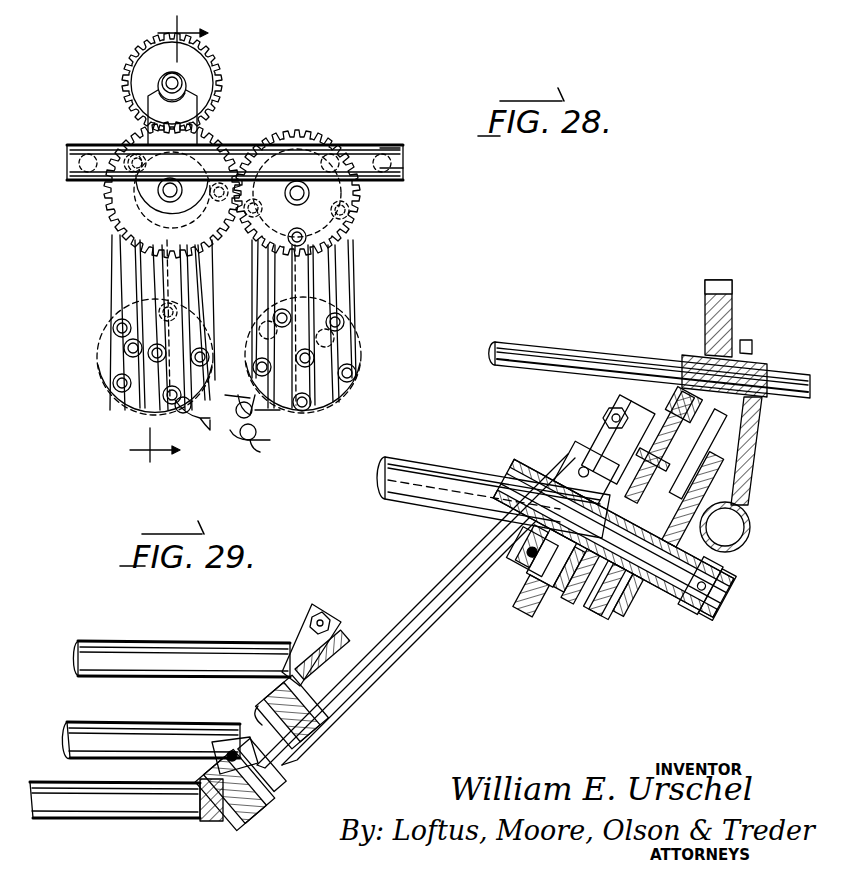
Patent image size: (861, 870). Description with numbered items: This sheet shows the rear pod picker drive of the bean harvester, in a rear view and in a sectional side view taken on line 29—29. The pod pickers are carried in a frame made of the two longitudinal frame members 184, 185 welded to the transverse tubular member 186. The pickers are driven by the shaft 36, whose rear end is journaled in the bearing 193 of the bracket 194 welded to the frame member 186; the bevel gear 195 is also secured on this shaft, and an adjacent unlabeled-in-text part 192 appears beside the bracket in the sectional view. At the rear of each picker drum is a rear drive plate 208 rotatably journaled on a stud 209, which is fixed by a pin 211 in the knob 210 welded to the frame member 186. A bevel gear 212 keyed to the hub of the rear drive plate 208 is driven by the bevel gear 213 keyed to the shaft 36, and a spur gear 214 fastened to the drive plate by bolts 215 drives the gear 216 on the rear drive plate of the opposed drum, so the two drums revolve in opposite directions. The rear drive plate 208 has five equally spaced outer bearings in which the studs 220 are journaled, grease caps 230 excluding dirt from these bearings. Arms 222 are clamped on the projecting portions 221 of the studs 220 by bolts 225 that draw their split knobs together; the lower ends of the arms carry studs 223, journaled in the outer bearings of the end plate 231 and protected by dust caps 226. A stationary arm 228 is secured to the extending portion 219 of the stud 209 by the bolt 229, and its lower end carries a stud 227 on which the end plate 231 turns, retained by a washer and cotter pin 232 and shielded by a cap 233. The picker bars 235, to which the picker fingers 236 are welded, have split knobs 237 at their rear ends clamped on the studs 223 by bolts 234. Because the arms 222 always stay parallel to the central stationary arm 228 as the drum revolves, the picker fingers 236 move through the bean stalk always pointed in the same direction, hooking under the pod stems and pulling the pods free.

In FIG. 28, the section line 29— 29 is at (169, 246).
In FIG. 28, the shaft 36 is at (182, 80).
In FIG. 29, the shaft 36 is at (555, 355).
In FIG. 28, the longitudinal frame member 184 is at (400, 148).
In FIG. 28, the longitudinal frame member 185 is at (95, 160).
In FIG. 29, the longitudinal frame member 185 is at (435, 473).
In FIG. 28, the transverse tubular member 186 is at (403, 168).
In FIG. 29, the transverse tubular member 186 is at (748, 524).
In FIG. 29, the arm 192 is at (750, 470).
In FIG. 28, the bearing 193 is at (160, 90).
In FIG. 29, the bearing 193 is at (740, 360).
In FIG. 28, the bracket 194 is at (160, 118).
In FIG. 28, the bevel gear 195 is at (140, 190).
In FIG. 29, the rear drive plate 208 is at (620, 600).
In FIG. 29, the stud 209 is at (735, 612).
In FIG. 28, the knob 210 is at (130, 205).
In FIG. 29, the knob 210 is at (718, 616).
In FIG. 28, the pin 211 is at (165, 208).
In FIG. 29, the pin 211 is at (732, 585).
In FIG. 29, the bevel gear 212 is at (620, 590).
In FIG. 28, the bevel gear 213 is at (143, 66).
In FIG. 29, the bevel gear 213 is at (722, 290).
In FIG. 28, the spur gear 214 is at (158, 197).
In FIG. 29, the spur gear 214 is at (548, 640).
In FIG. 29, the bolts 215 is at (640, 415).
In FIG. 28, the gear 216 is at (355, 196).
In FIG. 29, the extending portion of stud 219 is at (578, 500).
In FIG. 29, the studs 220 is at (545, 610).
In FIG. 29, the projecting portions of studs 221 is at (513, 598).
In FIG. 28, the arms 222 is at (355, 262).
In FIG. 29, the arms 222 is at (370, 693).
In FIG. 29, the studs 223 is at (268, 795).
In FIG. 29, the bolts 225 is at (612, 418).
In FIG. 29, the dust caps 226 is at (222, 808).
In FIG. 29, the stud 227 is at (330, 720).
In FIG. 28, the stationary arm 228 is at (145, 310).
In FIG. 29, the stationary arm 228 is at (405, 650).
In FIG. 29, the bolt 229 is at (590, 475).
In FIG. 29, the grease caps 230 is at (540, 620).
In FIG. 28, the end plate 231 is at (97, 353).
In FIG. 29, the end plate 231 is at (285, 758).
In FIG. 29, the cotter pin 232 is at (280, 690).
In FIG. 29, the cap 233 is at (262, 718).
In FIG. 29, the bolts 234 is at (325, 618).
In FIG. 29, the picker bars 235 is at (145, 648).
In FIG. 28, the picker fingers 236 is at (232, 400).
In FIG. 29, the split knobs 237 is at (215, 740).